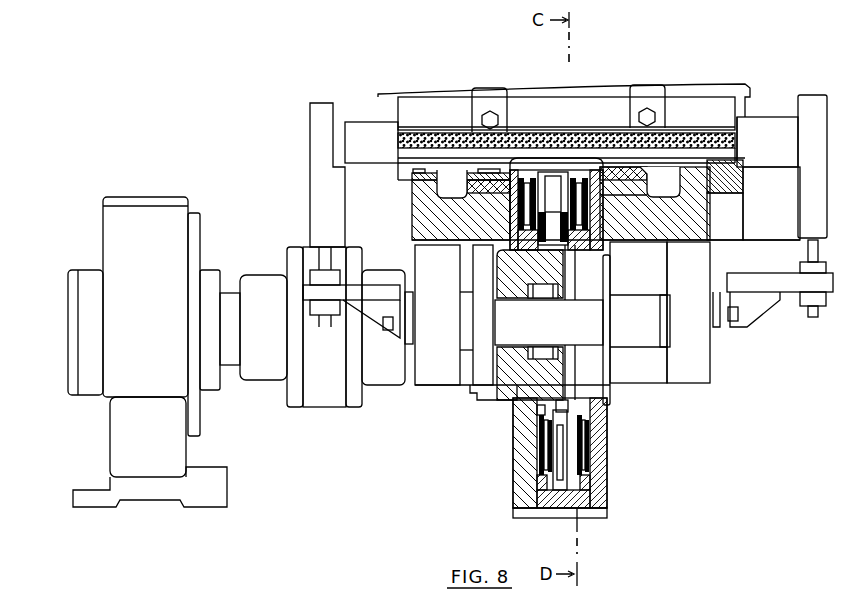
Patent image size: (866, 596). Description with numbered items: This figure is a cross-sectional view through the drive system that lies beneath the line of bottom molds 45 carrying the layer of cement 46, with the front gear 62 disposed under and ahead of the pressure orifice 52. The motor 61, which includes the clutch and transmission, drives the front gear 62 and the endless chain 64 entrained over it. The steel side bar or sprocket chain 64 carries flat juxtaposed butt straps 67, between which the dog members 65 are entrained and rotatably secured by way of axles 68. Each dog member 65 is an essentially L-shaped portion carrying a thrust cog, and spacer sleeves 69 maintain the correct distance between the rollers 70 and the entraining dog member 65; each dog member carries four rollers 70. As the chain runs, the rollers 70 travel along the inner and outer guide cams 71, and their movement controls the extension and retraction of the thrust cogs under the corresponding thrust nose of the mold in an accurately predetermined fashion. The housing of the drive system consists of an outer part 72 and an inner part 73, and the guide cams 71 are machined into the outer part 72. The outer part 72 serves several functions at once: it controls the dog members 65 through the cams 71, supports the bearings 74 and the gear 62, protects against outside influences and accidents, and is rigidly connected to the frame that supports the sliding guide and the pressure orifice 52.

The bottom mold 45 is at (668, 155).
The layer of cement 46 is at (626, 140).
The pressure orifice 52 is at (440, 120).
The motor 61 is at (180, 267).
The front gear 62 is at (585, 385).
The endless chain 64 is at (582, 247).
The dog member 65 is at (555, 188).
The butt strap 67 is at (533, 185).
The axle 68 is at (526, 445).
The spacer sleeve 69 is at (572, 193).
The roller 70 is at (598, 202).
The guide cam 71 is at (513, 168).
The outer part 72 is at (521, 505).
The inner part 73 is at (578, 510).
The bearing 74 is at (474, 386).